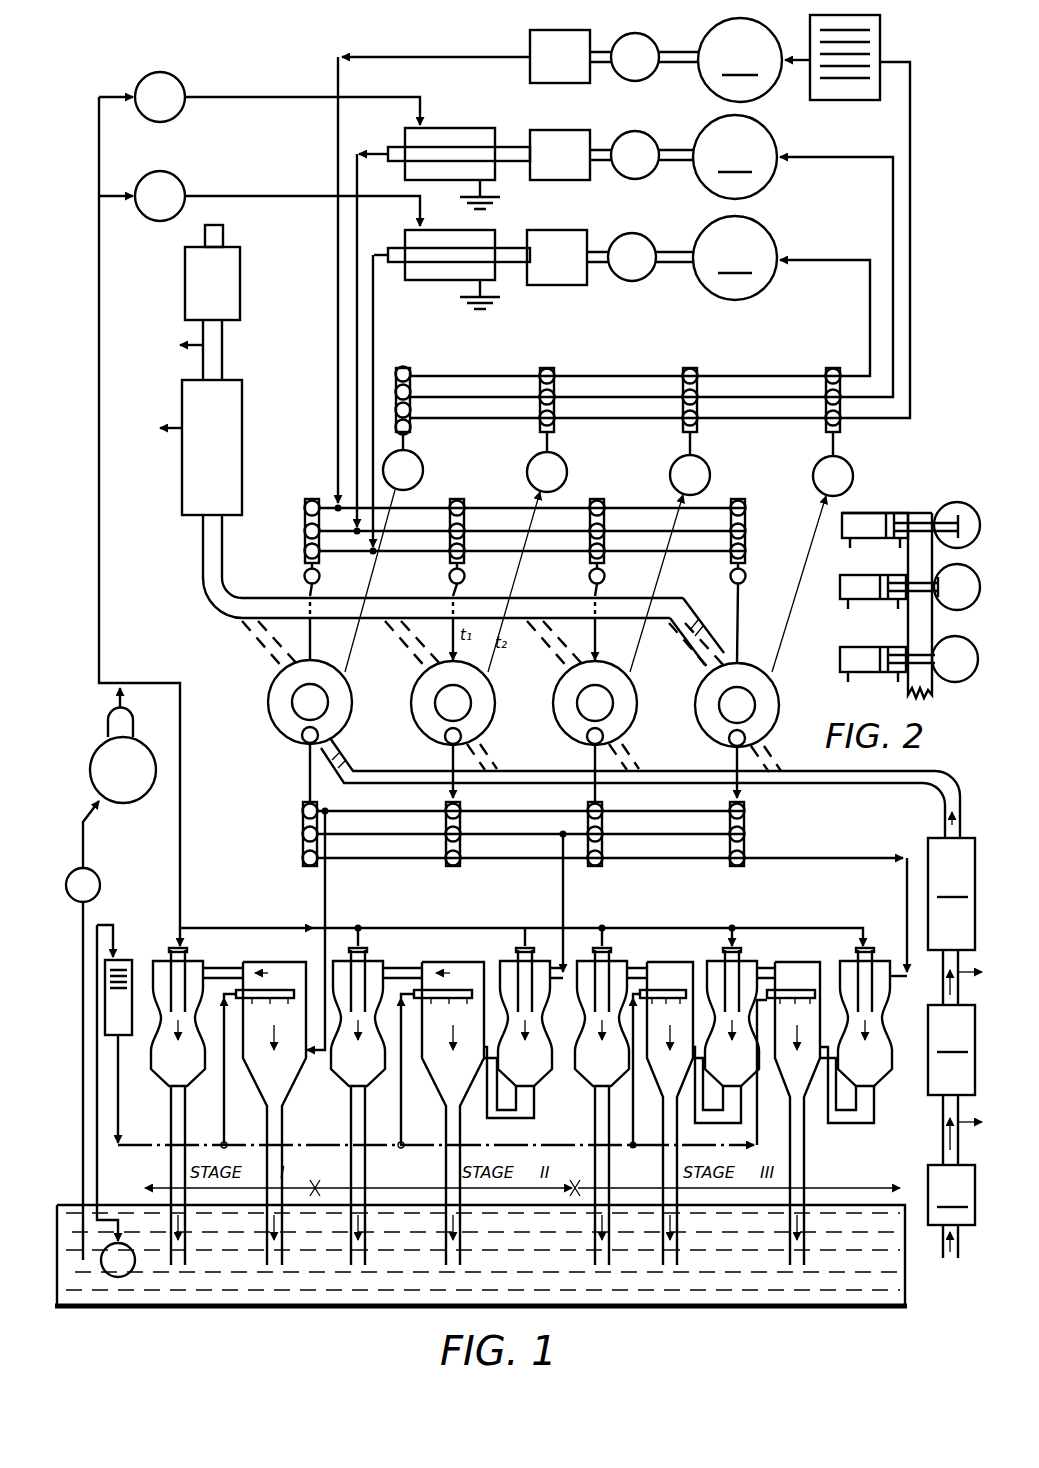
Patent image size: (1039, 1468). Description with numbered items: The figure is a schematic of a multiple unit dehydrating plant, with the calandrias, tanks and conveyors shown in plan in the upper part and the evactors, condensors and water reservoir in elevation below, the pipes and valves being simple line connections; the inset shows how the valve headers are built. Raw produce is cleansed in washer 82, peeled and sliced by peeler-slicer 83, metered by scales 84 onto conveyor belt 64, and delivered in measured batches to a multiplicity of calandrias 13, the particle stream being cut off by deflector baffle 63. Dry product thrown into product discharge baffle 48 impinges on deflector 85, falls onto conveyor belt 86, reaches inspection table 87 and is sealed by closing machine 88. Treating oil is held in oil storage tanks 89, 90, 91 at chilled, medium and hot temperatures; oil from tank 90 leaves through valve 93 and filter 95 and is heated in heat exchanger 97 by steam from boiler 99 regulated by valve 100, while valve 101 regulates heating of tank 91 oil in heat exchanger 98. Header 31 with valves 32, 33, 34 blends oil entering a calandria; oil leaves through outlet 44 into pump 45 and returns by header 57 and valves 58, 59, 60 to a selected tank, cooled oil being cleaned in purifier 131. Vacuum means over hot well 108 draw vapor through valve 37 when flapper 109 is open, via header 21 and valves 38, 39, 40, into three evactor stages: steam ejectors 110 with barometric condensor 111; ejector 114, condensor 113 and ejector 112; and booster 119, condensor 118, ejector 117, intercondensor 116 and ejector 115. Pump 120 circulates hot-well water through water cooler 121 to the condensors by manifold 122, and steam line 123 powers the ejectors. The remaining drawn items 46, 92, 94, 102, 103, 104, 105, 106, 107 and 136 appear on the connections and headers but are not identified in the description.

In FIG. 1, the calandria 13 is at (352, 676).
In FIG. 1, the header 21 is at (306, 785).
In FIG. 1, the header 31 is at (308, 640).
In FIG. 2, the header 31 is at (907, 636).
In FIG. 1, the valve 32 is at (304, 509).
In FIG. 2, the valve 32 is at (876, 540).
In FIG. 1, the valve 33 is at (304, 531).
In FIG. 2, the valve 33 is at (872, 600).
In FIG. 1, the valve 34 is at (304, 552).
In FIG. 2, the valve 34 is at (880, 674).
In FIG. 1, the valve 37 is at (300, 743).
In FIG. 1, the valve 38 is at (302, 859).
In FIG. 1, the valve 39 is at (302, 834).
In FIG. 1, the valve 40 is at (302, 811).
In FIG. 1, the outlet 44 is at (385, 595).
In FIG. 1, the pump 45 is at (423, 478).
In FIG. 1, the connecting line 46 is at (406, 445).
In FIG. 1, the product discharge baffle 48 is at (352, 718).
In FIG. 1, the header 57 is at (412, 428).
In FIG. 1, the valve 58 is at (412, 410).
In FIG. 1, the valve 59 is at (412, 390).
In FIG. 1, the valve 60 is at (412, 372).
In FIG. 1, the deflector baffle 63 is at (355, 768).
In FIG. 1, the conveyor belt 64 is at (835, 790).
In FIG. 1, the washer 82 is at (951, 1211).
In FIG. 1, the peeler-slicer 83 is at (955, 1085).
In FIG. 1, the scales 84 is at (955, 921).
In FIG. 1, the deflector 85 is at (695, 638).
In FIG. 1, the conveyor belt 86 is at (665, 600).
In FIG. 1, the inspection table 87 is at (201, 447).
In FIG. 1, the closing machine 88 is at (210, 313).
In FIG. 1, the oil storage tank 89 is at (241, 281).
In FIG. 1, the oil storage tank 90 is at (224, 234).
In FIG. 1, the oil storage tank 91 is at (735, 258).
In FIG. 1, the voltage regulator 92 is at (641, 34).
In FIG. 1, the valve 93 is at (641, 138).
In FIG. 1, the voltage regulator 94 is at (640, 238).
In FIG. 1, the filter 95 is at (566, 35).
In FIG. 1, the heat exchanger 97 is at (440, 128).
In FIG. 1, the heat exchanger 98 is at (424, 232).
In FIG. 1, the boiler 99 is at (138, 740).
In FIG. 1, the valve 100 is at (176, 78).
In FIG. 1, the valve 101 is at (181, 180).
In FIG. 1, the line 102 is at (340, 812).
In FIG. 1, the line 103 is at (340, 835).
In FIG. 1, the line 104 is at (340, 859).
In FIG. 1, the actuator cylinder 105 is at (646, 509).
In FIG. 2, the actuator cylinder 105 is at (950, 503).
In FIG. 1, the actuator cylinder 106 is at (646, 533).
In FIG. 2, the actuator cylinder 106 is at (980, 565).
In FIG. 1, the actuator cylinder 107 is at (646, 554).
In FIG. 2, the actuator cylinder 107 is at (968, 700).
In FIG. 1, the hot well 108 is at (895, 1300).
In FIG. 1, the flapper 109 is at (300, 737).
In FIG. 1, the steam ejector 110 is at (196, 958).
In FIG. 1, the barometric condensor 111 is at (266, 963).
In FIG. 1, the steam ejector 112 is at (372, 960).
In FIG. 1, the barometric condensor 113 is at (440, 963).
In FIG. 1, the steam ejector 114 is at (520, 960).
In FIG. 1, the steam ejector 115 is at (606, 958).
In FIG. 1, the intercondensor 116 is at (655, 963).
In FIG. 1, the ejector 117 is at (734, 958).
In FIG. 1, the barometric condensor 118 is at (787, 963).
In FIG. 1, the booster 119 is at (865, 958).
In FIG. 1, the pump 120 is at (125, 1276).
In FIG. 1, the water cooler 121 is at (120, 958).
In FIG. 1, the manifold 122 is at (518, 1147).
In FIG. 1, the steam line 123 is at (182, 838).
In FIG. 1, the purifier 131 is at (882, 40).
In FIG. 1, the valve 136 is at (304, 577).